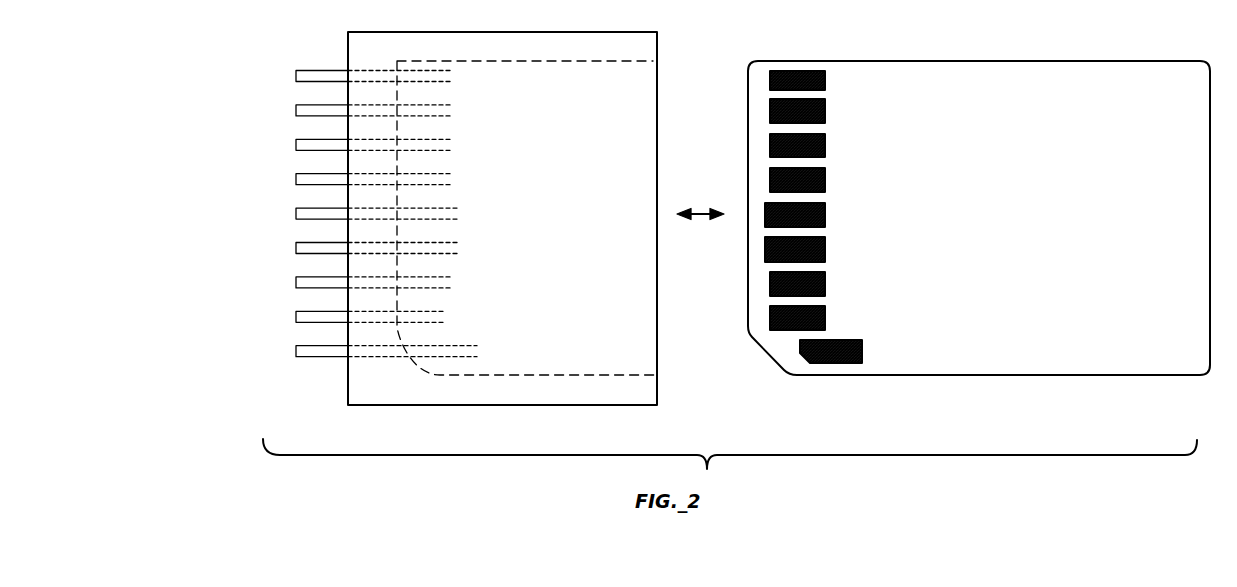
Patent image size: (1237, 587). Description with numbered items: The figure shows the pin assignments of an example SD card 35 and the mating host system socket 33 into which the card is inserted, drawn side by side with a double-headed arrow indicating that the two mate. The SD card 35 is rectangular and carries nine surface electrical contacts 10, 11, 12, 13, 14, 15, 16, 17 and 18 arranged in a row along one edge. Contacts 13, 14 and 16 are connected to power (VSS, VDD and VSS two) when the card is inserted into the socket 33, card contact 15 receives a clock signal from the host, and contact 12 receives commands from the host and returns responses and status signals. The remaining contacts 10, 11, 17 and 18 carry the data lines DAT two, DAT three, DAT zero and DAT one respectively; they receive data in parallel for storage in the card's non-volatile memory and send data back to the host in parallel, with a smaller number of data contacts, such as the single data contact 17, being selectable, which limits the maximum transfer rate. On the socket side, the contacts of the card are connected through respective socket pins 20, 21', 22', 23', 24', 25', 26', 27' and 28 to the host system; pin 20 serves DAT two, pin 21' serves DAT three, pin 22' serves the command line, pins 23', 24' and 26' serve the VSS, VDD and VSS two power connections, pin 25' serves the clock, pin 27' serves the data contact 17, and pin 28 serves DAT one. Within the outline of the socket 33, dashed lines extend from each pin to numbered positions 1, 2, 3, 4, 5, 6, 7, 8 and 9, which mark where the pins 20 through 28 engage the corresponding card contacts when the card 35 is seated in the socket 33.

The host connector contact (DAT 3) 1 is at (445, 321).
The host connector contact (CMD) 2 is at (452, 286).
The host connector contact (VSS) 3 is at (460, 252).
The host connector contact (VDD) 4 is at (460, 218).
The host connector contact (CLK) 5 is at (450, 183).
The host connector contact (VSS2) 6 is at (450, 149).
The host connector contact (DAT 2) 7 is at (450, 114).
The host connector contact (DAT 1) 8 is at (450, 80).
The host connector contact (DAT 2, extra) 9 is at (477, 355).
The surface electrical contact 10 is at (866, 348).
The surface electrical contact 11 is at (825, 315).
The surface electrical contact 12 is at (825, 281).
The surface electrical contact 13 is at (825, 247).
The surface electrical contact 14 is at (825, 212).
The surface electrical contact 15 is at (825, 177).
The surface electrical contact 16 is at (825, 142).
The surface electrical contact 17 is at (825, 108).
The surface electrical contact 18 is at (825, 78).
The socket pin 20 is at (342, 345).
The socket pin 21' is at (288, 307).
The socket pin 22' is at (294, 272).
The socket pin 23' is at (297, 238).
The socket pin 24' is at (295, 204).
The socket pin 25' is at (298, 169).
The socket pin 26' is at (291, 135).
The socket pin 27' is at (288, 100).
The socket pin 28 is at (342, 70).
The socket 33 is at (521, 417).
The SD card 35 is at (1078, 391).